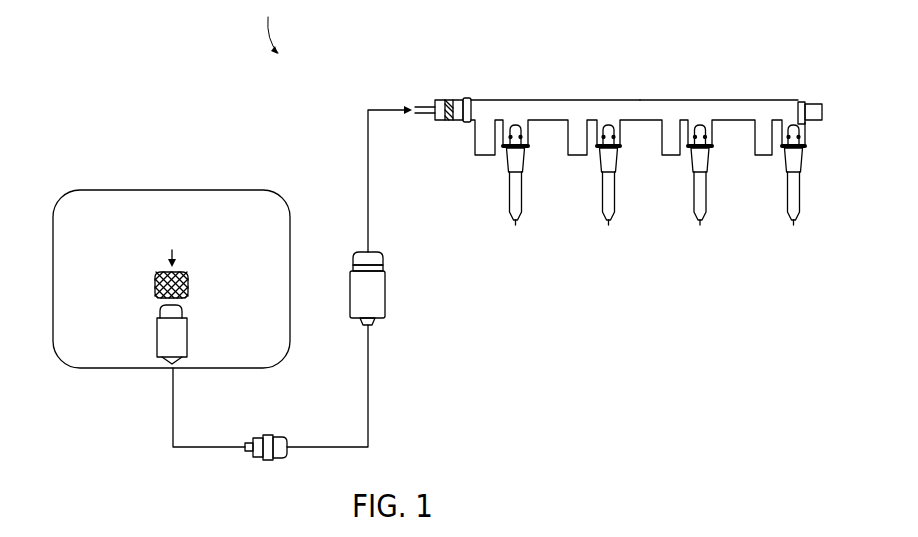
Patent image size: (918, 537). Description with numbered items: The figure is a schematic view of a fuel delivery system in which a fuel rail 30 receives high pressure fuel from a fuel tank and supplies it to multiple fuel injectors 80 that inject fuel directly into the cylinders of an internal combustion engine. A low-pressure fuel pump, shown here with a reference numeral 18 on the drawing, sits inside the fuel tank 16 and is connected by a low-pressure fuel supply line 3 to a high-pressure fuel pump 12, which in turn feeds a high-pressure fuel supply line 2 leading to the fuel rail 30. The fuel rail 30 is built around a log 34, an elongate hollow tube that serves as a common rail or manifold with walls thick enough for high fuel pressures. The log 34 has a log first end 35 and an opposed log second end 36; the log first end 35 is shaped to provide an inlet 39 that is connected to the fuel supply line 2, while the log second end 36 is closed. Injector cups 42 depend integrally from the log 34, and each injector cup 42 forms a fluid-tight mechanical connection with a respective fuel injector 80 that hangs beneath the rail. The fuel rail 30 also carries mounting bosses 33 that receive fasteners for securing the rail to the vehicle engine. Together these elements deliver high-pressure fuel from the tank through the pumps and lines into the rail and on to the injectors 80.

The high-pressure fuel supply line 2 is at (366, 165).
The low-pressure fuel supply line 3 is at (372, 377).
The high-pressure fuel pump 12 is at (387, 298).
The fuel tank 16 is at (148, 189).
The fuel pump 18 is at (180, 334).
The fuel rail 30 is at (645, 103).
The mounting bosses 33 is at (476, 148).
The log 34 is at (744, 106).
The log first end 35 is at (471, 97).
The log second end 36 is at (818, 103).
The inlet 39 is at (447, 98).
The injector cup 42 is at (528, 128).
The fuel injectors 80 is at (510, 200).